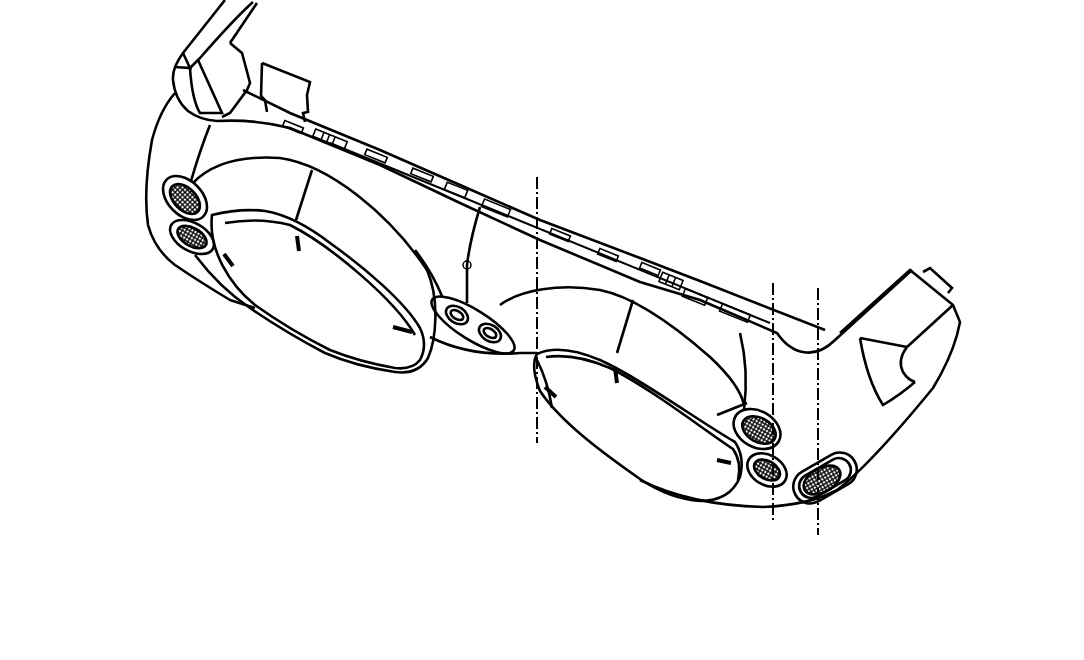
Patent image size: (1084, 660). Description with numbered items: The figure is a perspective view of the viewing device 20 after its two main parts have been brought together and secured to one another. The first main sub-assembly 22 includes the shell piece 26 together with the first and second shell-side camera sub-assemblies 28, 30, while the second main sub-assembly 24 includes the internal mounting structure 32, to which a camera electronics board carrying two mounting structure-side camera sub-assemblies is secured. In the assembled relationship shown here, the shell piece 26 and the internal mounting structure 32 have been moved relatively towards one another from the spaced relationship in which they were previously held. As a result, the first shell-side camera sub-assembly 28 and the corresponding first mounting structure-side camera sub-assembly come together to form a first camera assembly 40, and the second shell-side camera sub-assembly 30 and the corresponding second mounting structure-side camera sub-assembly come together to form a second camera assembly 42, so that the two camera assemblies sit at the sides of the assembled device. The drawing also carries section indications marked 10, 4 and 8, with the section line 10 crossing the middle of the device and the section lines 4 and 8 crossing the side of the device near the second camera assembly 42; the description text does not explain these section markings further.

The viewing device 20 is at (698, 173).
The first main sub-assembly 22 is at (150, 216).
The second main sub-assembly 24 is at (349, 116).
The shell piece 26 is at (313, 210).
The first shell-side camera sub-assembly 28 is at (737, 463).
The second shell-side camera sub-assembly 30 is at (840, 480).
The internal mounting structure 32 is at (372, 140).
The first camera assembly 40 is at (738, 443).
The second camera assembly 42 is at (842, 496).
The section line 10- 10 is at (577, 193).
The section line 4- 4 is at (803, 298).
The section line 8- 8 is at (820, 300).